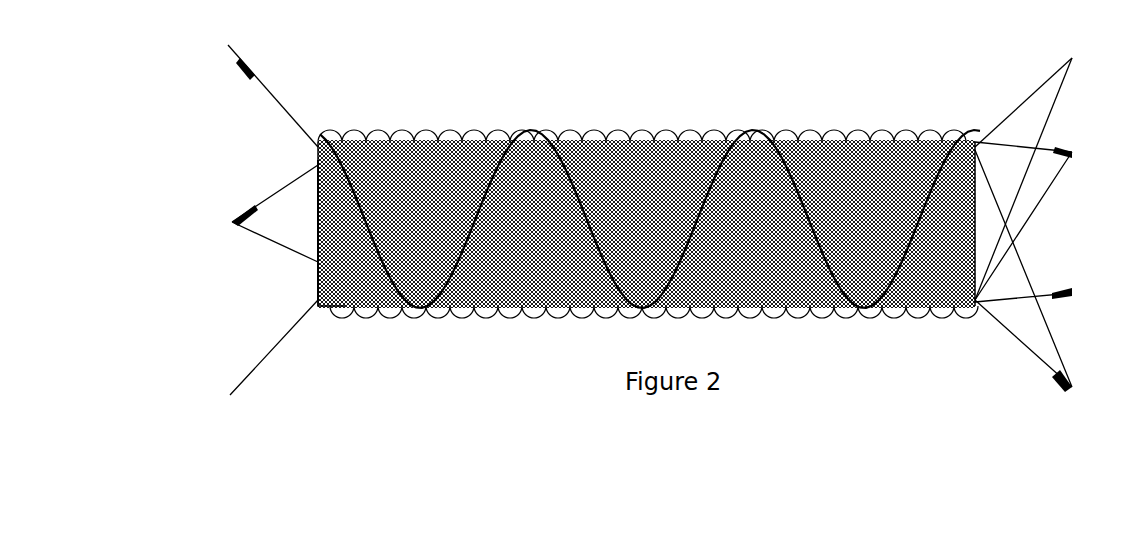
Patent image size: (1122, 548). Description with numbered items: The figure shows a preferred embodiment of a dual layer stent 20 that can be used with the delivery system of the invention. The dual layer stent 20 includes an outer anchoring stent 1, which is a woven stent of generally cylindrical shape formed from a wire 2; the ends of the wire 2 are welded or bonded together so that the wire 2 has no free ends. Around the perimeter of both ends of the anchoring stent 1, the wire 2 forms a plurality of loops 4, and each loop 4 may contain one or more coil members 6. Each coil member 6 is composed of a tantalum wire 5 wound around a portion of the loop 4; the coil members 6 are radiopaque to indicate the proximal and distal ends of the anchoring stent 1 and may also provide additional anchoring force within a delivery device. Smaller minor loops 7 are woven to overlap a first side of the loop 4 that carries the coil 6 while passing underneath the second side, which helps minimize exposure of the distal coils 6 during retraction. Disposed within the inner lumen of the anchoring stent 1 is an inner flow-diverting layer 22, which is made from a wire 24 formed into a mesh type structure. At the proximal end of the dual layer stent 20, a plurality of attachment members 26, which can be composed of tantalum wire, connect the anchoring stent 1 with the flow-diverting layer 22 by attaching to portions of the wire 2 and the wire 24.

The anchoring stent 1 is at (545, 318).
The wire 2 is at (586, 137).
The loops 4 is at (290, 178).
The tantalum wire 5 is at (943, 150).
The coil members 6 is at (258, 73).
The minor loops 7 is at (983, 187).
The dual layer stent 20 is at (416, 358).
The flow-diverting layer 22 is at (312, 234).
The wire 24 is at (973, 253).
The attachment members 26 is at (325, 268).